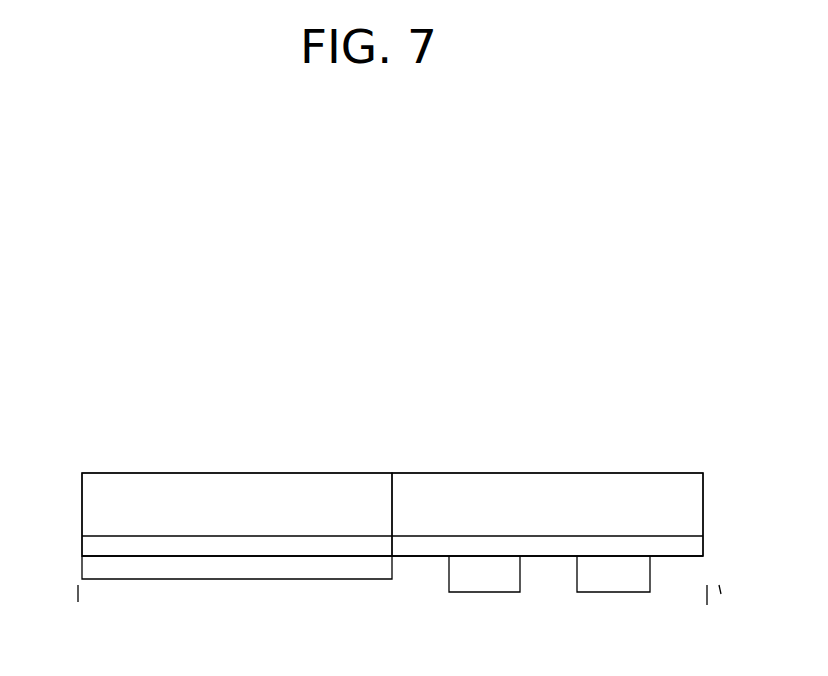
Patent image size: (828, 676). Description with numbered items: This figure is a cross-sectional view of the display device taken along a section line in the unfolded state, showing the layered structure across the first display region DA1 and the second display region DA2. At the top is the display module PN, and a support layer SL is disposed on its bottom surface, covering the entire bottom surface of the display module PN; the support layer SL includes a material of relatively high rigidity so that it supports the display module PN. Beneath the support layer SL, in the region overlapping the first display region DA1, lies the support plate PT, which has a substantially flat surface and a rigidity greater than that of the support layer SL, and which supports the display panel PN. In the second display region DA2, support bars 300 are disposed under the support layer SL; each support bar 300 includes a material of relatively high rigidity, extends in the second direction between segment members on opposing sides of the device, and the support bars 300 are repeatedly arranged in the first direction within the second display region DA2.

The first display region DA1 is at (392, 443).
The second display region DA2 is at (703, 443).
The display module PN is at (89, 503).
The support layer SL is at (89, 545).
The support plate PT is at (89, 567).
The support bar 300 is at (485, 582).